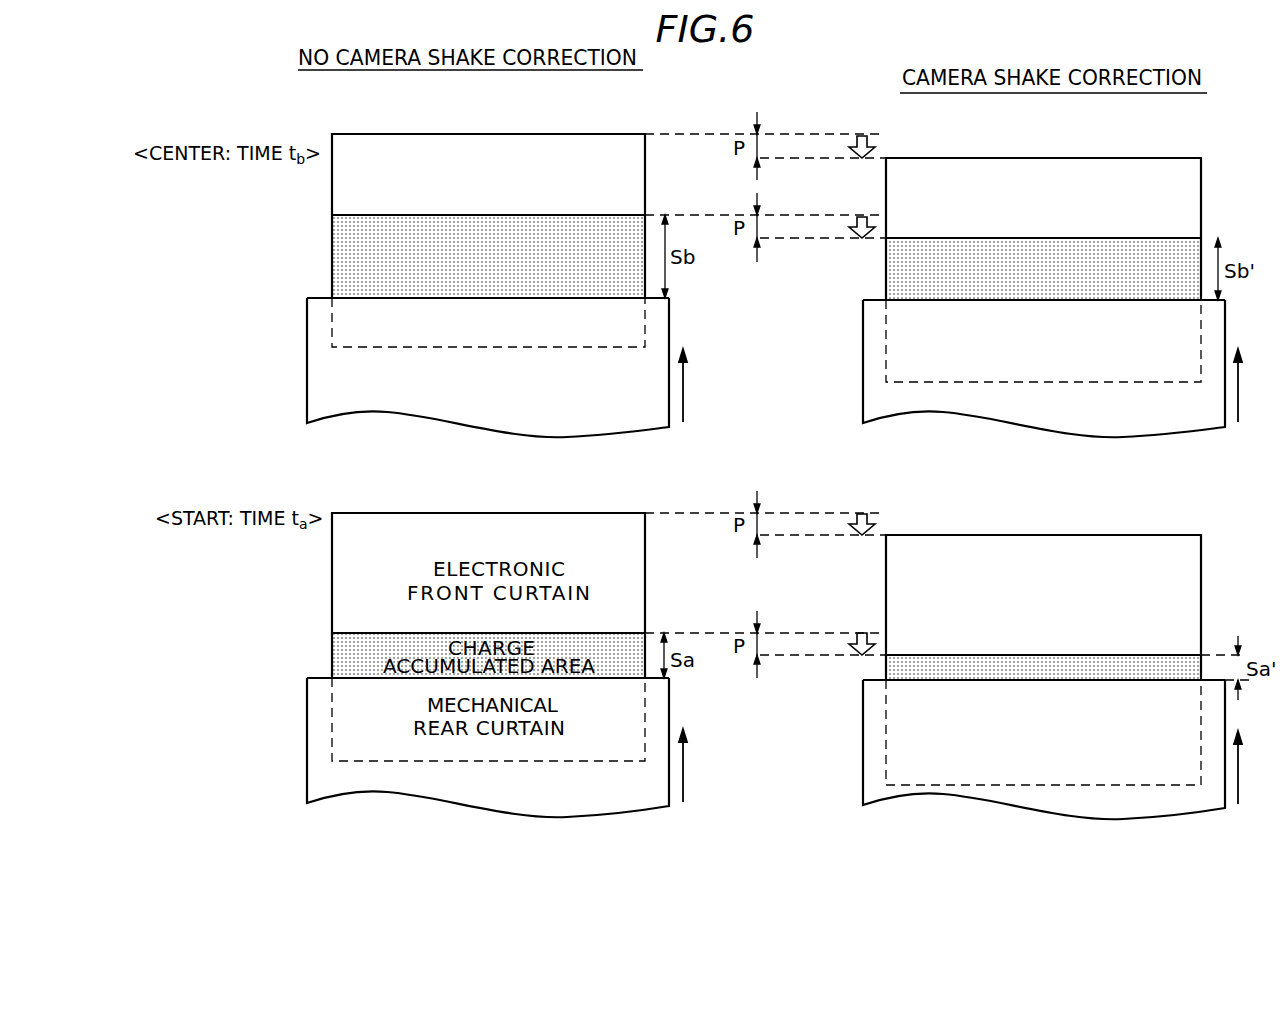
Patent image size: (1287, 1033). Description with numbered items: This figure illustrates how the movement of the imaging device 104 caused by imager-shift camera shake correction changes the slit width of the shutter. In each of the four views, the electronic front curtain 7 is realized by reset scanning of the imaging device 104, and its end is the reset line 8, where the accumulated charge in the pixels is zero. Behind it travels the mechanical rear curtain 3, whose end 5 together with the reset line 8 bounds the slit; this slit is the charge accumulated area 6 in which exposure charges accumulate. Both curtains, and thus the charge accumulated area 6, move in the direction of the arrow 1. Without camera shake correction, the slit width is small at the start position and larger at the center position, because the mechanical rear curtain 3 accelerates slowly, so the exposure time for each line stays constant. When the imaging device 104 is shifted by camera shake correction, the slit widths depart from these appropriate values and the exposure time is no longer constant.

The arrow 1 is at (685, 385).
The mechanical rear curtain 3 is at (400, 401).
The end of the mechanical rear curtain 5 is at (372, 299).
The charge accumulated area 6 is at (340, 279).
The electronic front curtain 7 is at (485, 150).
The reset line 8 is at (373, 215).
The imaging device 104 is at (332, 235).